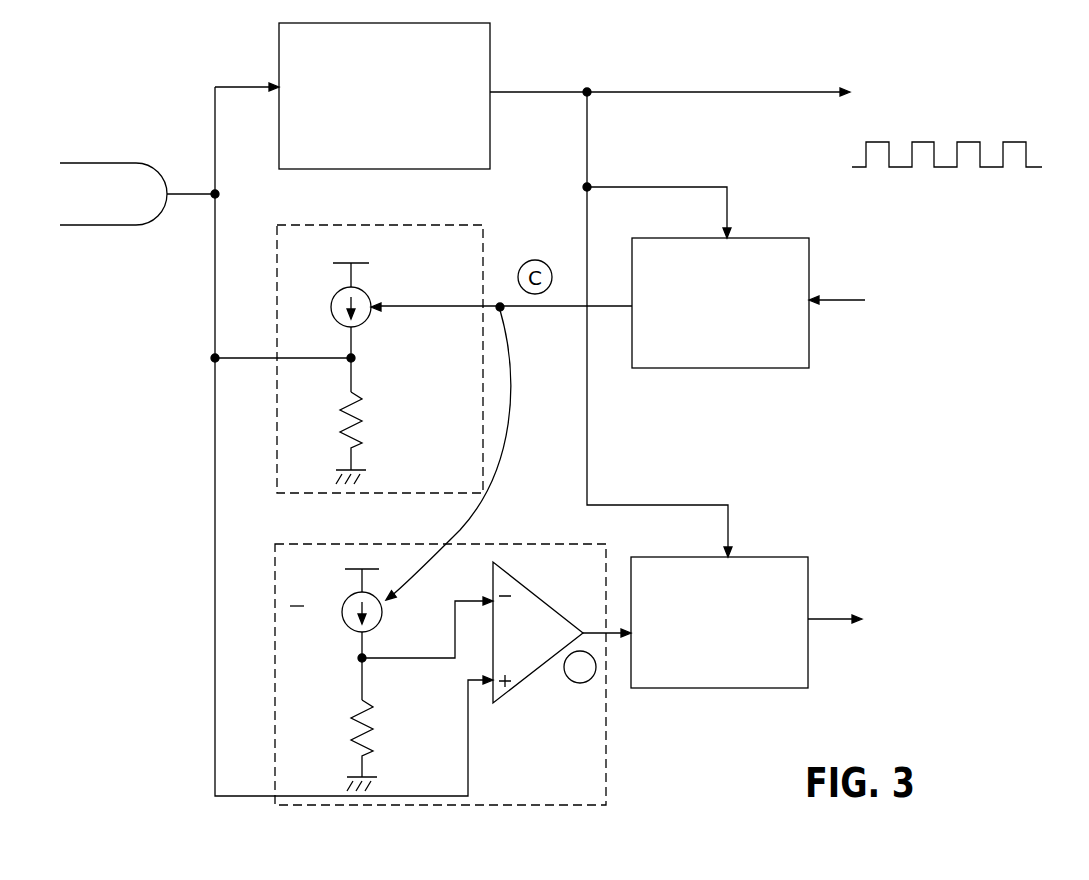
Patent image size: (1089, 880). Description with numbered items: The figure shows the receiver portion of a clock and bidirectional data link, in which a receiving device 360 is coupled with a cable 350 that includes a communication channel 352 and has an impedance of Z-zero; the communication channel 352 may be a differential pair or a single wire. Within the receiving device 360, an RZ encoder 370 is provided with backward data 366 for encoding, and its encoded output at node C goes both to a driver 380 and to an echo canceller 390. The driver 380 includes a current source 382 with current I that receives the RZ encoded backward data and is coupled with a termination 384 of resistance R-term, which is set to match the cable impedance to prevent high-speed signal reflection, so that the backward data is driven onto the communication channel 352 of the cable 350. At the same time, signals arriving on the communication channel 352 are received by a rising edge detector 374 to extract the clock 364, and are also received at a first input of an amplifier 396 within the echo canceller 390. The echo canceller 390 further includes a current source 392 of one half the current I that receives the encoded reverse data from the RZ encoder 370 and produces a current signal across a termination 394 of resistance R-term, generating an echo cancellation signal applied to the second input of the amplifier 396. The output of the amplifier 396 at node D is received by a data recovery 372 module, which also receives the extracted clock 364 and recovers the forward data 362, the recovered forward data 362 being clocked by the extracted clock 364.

The cable 350 is at (113, 177).
The communication channel 352 is at (193, 197).
The receiving device 360 is at (670, 70).
The forward data 362 is at (905, 626).
The extracted clock 364 is at (947, 142).
The backward data 366 is at (897, 314).
The RZ encoder 370 is at (720, 303).
The data recovery 372 is at (719, 622).
The rising edge detector 374 is at (384, 96).
The driver 380 is at (349, 373).
The current source 382 is at (366, 327).
The termination 384 is at (385, 432).
The echo canceller 390 is at (440, 704).
The current source 392 is at (367, 634).
The termination 394 is at (398, 743).
The amplifier 396 is at (538, 632).